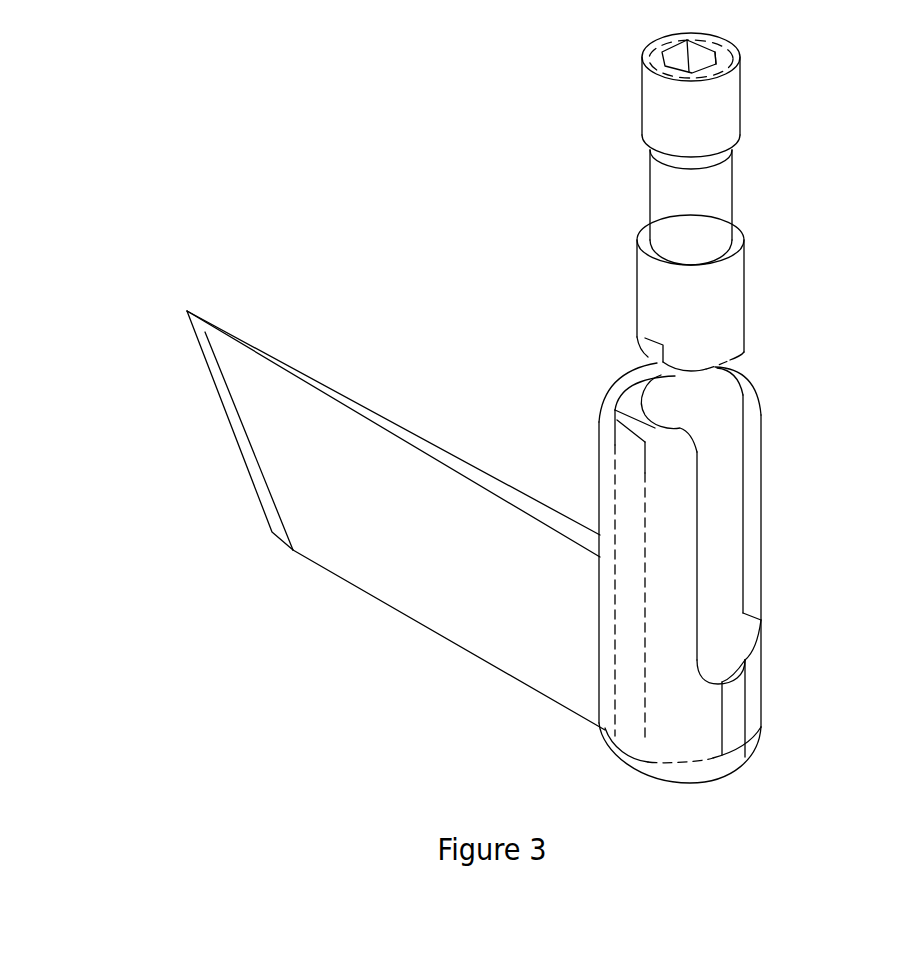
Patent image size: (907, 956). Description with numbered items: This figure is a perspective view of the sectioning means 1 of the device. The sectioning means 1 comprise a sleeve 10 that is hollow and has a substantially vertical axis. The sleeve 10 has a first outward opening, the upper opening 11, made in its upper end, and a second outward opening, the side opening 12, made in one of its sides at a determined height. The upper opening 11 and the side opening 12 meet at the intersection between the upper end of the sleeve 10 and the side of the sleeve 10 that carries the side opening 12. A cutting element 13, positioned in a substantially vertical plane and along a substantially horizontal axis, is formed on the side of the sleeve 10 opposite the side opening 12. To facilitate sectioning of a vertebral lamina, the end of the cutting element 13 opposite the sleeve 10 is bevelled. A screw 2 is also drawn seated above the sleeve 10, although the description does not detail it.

The sectioning means 1 is at (389, 666).
The clamping screw 2 is at (796, 163).
The sleeve 10 is at (690, 735).
The upper opening 11 is at (720, 527).
The side opening 12 is at (675, 405).
The cutting element 13 is at (357, 472).